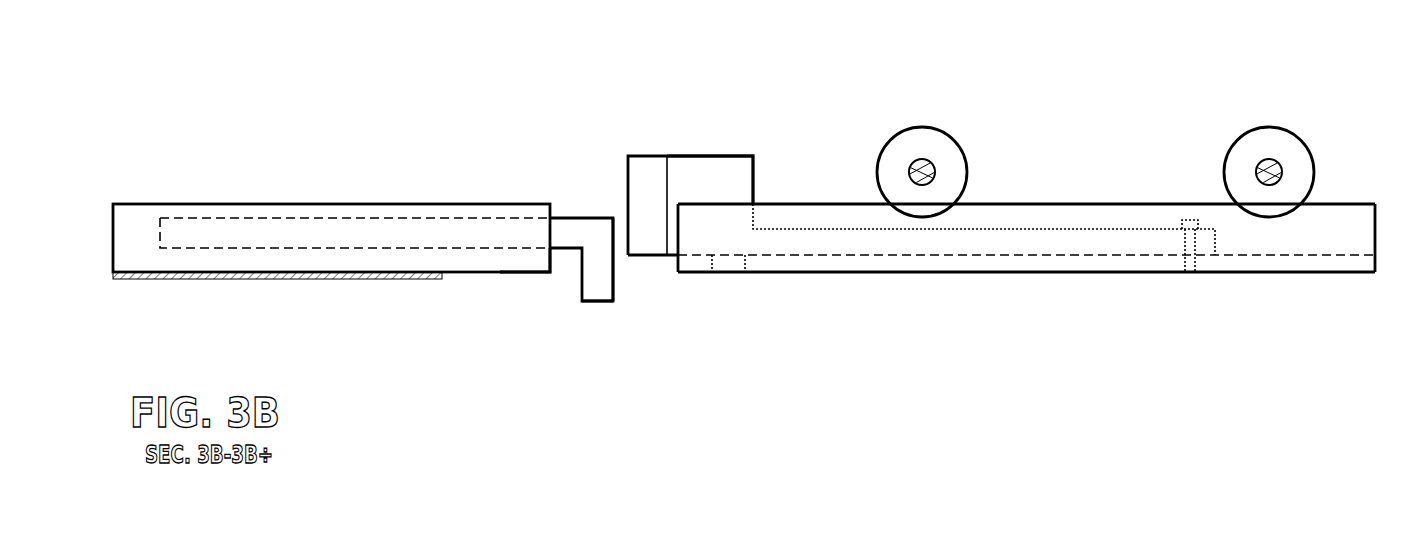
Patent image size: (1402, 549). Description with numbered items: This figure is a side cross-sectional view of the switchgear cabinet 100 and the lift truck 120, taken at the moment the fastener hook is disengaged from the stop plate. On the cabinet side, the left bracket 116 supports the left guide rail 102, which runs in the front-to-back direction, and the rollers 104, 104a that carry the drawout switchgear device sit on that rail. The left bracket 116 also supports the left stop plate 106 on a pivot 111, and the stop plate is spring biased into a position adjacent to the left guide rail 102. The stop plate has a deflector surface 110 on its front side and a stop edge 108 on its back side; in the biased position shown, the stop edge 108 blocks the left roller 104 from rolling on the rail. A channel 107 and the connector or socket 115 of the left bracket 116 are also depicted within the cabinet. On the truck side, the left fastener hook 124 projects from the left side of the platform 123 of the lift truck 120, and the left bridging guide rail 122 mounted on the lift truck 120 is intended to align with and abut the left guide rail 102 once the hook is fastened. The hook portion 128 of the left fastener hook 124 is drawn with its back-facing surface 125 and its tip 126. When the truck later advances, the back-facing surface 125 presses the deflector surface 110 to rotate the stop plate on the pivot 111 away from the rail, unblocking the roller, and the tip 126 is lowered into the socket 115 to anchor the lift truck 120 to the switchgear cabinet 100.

The switchgear cabinet 100 is at (1222, 306).
The left guide rail 102 is at (1078, 202).
The left roller 104 is at (937, 130).
The roller 104a is at (1296, 135).
The left stop plate 106 is at (673, 130).
The channel 107 is at (863, 247).
The stop edge 108 is at (754, 172).
The deflector surface 110 is at (645, 172).
The pivot 111 is at (1184, 209).
The socket 115 is at (731, 289).
The left bracket 116 is at (1112, 273).
The lift truck 120 is at (331, 265).
The left bridging guide rail 122 is at (352, 203).
The platform 123 is at (240, 280).
The left fastener hook 124 is at (588, 218).
The back-facing surface 125 is at (615, 273).
The tip 126 is at (598, 302).
The hook portion 128 is at (556, 294).